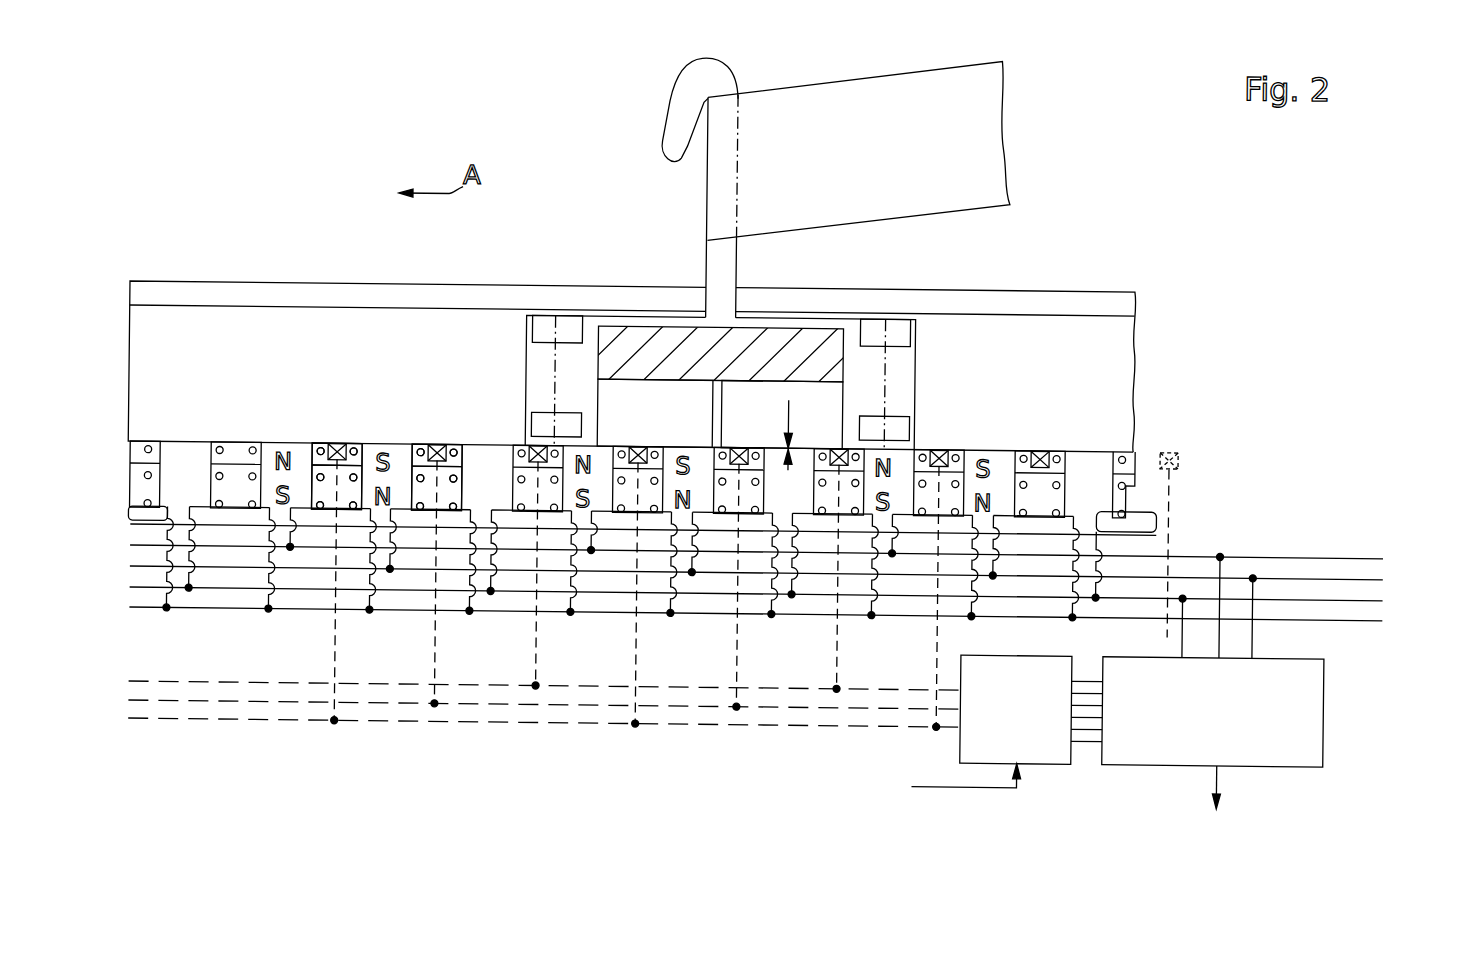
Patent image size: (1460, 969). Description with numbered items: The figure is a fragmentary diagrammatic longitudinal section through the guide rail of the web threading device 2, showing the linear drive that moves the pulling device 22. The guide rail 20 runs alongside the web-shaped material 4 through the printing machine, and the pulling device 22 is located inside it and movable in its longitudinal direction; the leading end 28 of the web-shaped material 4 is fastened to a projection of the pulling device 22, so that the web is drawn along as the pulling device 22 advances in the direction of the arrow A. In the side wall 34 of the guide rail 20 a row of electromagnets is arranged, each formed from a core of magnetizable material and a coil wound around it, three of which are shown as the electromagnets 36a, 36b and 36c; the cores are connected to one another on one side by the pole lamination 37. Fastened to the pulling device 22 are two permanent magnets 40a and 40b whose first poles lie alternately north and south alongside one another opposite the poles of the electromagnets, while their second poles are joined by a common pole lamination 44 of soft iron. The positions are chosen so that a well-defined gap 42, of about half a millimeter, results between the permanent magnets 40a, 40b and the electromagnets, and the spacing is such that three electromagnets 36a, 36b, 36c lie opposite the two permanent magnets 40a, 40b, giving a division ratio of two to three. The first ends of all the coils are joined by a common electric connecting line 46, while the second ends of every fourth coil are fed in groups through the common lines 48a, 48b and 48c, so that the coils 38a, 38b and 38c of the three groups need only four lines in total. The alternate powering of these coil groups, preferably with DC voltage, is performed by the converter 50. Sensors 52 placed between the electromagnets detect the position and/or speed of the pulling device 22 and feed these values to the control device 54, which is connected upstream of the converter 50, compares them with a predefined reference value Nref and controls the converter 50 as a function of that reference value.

The web threading device 2 is at (1283, 287).
The web-shaped material 4 is at (977, 184).
The guide rail 20 is at (225, 290).
The pulling device 22 is at (753, 320).
The leading end 28 is at (819, 100).
The side wall 34 is at (232, 448).
The electromagnet 36a is at (292, 448).
The electromagnet 36b is at (397, 450).
The electromagnet 36c is at (497, 450).
The pole lamination 37 is at (133, 508).
The coil 38a is at (251, 482).
The coil 38b is at (354, 482).
The coil 38c is at (454, 482).
The permanent magnet 40a is at (835, 400).
The permanent magnet 40b is at (628, 393).
The gap 42 is at (812, 433).
The common pole lamination 44 is at (683, 345).
The common electric connecting line 46 is at (1316, 608).
The common line 48a is at (1386, 545).
The common line 48b is at (1389, 566).
The common line 48c is at (1389, 587).
The converter 50 is at (1305, 735).
The sensor 52 is at (340, 442).
The control device 54 is at (1048, 740).